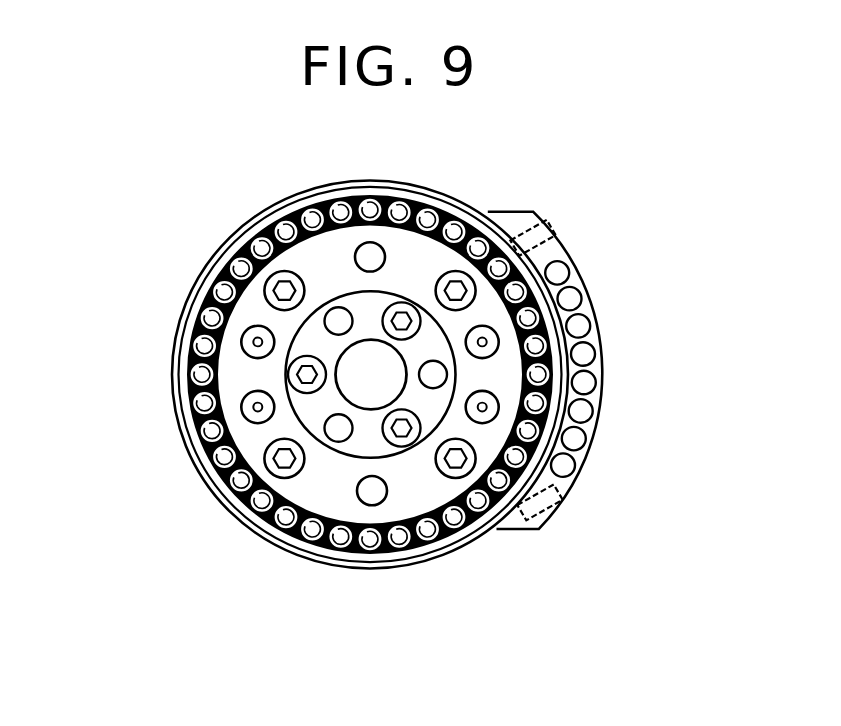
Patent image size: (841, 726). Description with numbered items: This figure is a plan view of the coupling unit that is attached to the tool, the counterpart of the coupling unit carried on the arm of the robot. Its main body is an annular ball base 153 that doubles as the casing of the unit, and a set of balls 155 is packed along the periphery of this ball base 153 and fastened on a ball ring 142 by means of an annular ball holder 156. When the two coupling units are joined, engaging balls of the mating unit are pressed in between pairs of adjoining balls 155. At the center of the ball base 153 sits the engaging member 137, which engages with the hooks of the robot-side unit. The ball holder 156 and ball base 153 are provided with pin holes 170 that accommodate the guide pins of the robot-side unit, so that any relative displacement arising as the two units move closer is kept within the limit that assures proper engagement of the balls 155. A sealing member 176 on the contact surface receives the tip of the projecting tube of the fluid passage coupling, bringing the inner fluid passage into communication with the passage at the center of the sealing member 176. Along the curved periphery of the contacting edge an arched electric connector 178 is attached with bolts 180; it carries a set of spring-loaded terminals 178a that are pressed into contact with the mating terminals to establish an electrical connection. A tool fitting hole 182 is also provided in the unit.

The engaging member 137 is at (373, 361).
The ball ring 142 is at (152, 354).
The annular ball base 153 is at (255, 524).
The balls 155 is at (192, 325).
The annular ball holder 156 is at (317, 252).
The pin holes 170 is at (372, 256).
The sealing member 176 is at (483, 339).
The arched electric connector 178 is at (603, 287).
The terminals 178a is at (581, 444).
The bolts 180 is at (541, 209).
The tool fitting hole 182 is at (267, 260).